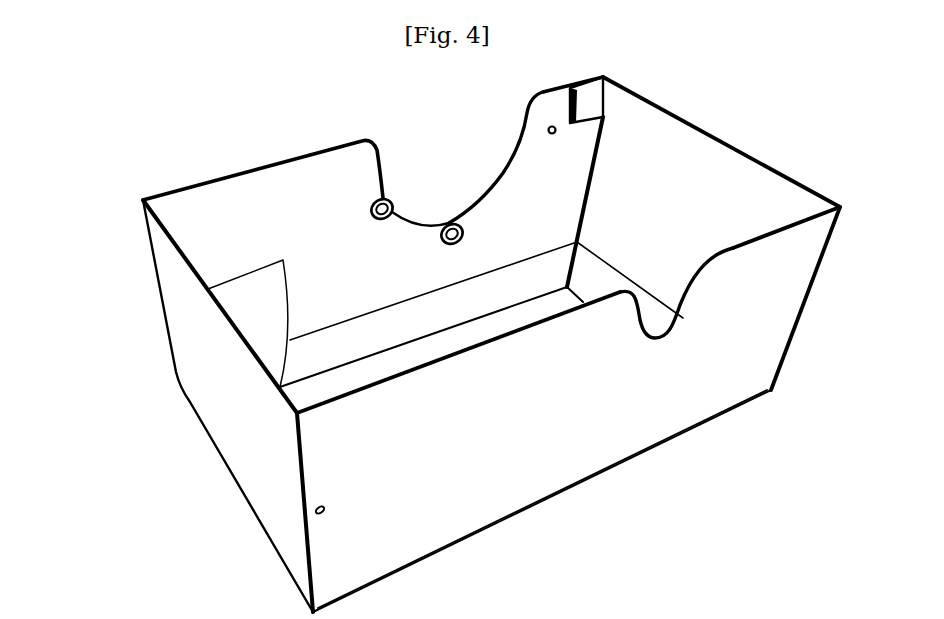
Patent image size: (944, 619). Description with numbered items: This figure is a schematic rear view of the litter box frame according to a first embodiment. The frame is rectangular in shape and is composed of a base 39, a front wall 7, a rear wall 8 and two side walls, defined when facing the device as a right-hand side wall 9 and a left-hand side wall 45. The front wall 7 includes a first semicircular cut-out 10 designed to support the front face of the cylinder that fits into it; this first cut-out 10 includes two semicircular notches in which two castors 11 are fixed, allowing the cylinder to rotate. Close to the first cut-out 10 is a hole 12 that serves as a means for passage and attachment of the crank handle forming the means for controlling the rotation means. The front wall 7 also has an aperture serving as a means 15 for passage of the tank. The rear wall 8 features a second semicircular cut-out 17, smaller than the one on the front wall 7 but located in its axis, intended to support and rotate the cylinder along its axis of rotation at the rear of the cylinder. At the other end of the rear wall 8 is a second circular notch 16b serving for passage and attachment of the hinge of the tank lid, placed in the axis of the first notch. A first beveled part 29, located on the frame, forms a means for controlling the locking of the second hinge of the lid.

The front wall 7 is at (256, 169).
The rear wall 8 is at (583, 393).
The right-hand side wall 9 is at (214, 325).
The first semicircular cut-out 10 is at (508, 168).
The castors 11 is at (451, 222).
The hole 12 is at (540, 91).
The means for passage of the tank 15 is at (283, 365).
The second circular notch 16b is at (297, 495).
The second semicircular cut-out 17 is at (658, 336).
The first beveled part 29 is at (589, 100).
The base 39 is at (512, 522).
The left-hand side wall 45 is at (720, 140).